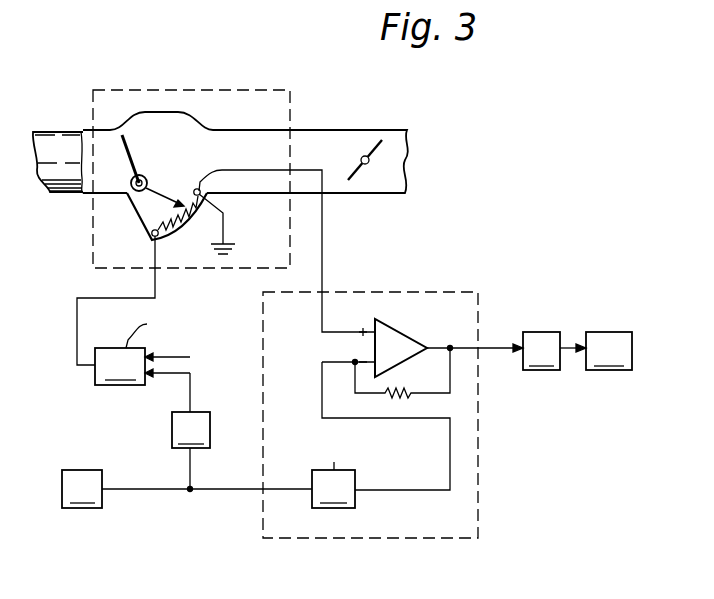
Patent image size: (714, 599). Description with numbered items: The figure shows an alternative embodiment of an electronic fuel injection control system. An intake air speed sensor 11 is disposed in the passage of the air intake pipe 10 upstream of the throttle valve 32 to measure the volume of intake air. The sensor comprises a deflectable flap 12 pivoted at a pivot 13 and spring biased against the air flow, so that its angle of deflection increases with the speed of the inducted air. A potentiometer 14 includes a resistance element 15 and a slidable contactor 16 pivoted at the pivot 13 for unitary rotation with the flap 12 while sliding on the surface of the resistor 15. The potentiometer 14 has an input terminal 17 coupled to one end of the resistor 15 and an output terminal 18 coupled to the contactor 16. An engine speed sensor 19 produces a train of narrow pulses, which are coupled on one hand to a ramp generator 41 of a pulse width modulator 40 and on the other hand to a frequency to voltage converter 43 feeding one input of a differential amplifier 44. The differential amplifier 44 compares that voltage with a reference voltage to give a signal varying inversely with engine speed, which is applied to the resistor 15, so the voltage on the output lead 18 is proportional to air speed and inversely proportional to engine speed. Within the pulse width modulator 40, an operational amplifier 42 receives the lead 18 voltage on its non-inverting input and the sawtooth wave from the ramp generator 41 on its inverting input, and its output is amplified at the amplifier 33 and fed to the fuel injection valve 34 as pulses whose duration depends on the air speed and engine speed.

The air intake pipe 10 is at (56, 130).
The intake air speed sensor 11 is at (219, 159).
The deflectable flap 12 is at (130, 140).
The pivot 13 is at (157, 190).
The potentiometer 14 is at (137, 228).
The resistance element 15 is at (177, 235).
The slidable contactor 16 is at (170, 196).
The input terminal 17 is at (160, 292).
The output terminal 18 is at (324, 231).
The engine speed sensor 19 is at (86, 530).
The throttle valve 32 is at (383, 112).
The amplifier 33 is at (535, 398).
The fuel injection valve 34 is at (595, 332).
The pulse width modulator 40 is at (290, 538).
The ramp generator 41 is at (362, 435).
The operational amplifier 42 is at (402, 333).
The frequency to voltage converter 43 is at (156, 443).
The differential amplifier 44 is at (174, 360).